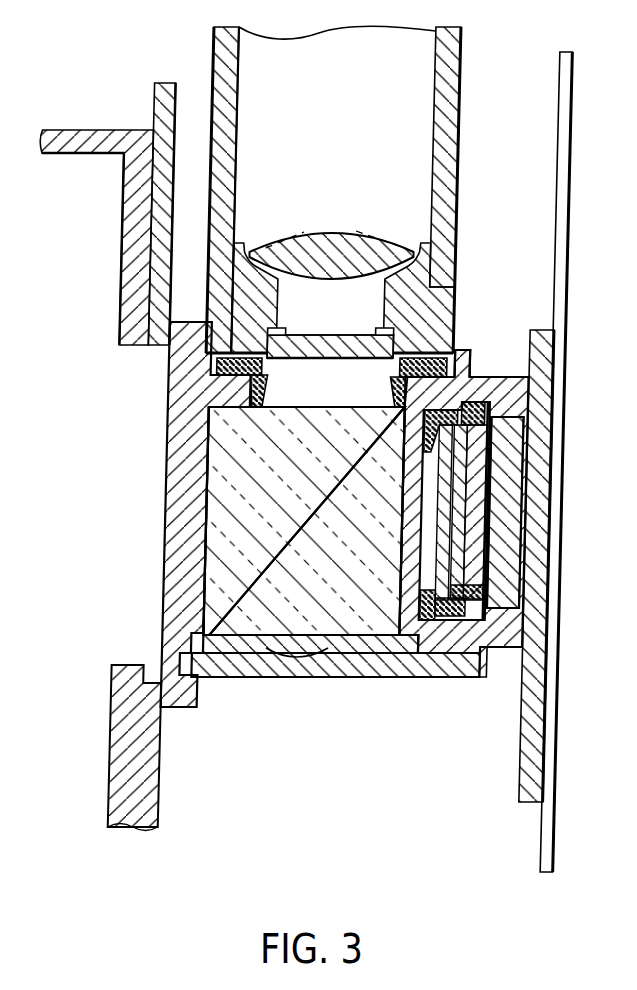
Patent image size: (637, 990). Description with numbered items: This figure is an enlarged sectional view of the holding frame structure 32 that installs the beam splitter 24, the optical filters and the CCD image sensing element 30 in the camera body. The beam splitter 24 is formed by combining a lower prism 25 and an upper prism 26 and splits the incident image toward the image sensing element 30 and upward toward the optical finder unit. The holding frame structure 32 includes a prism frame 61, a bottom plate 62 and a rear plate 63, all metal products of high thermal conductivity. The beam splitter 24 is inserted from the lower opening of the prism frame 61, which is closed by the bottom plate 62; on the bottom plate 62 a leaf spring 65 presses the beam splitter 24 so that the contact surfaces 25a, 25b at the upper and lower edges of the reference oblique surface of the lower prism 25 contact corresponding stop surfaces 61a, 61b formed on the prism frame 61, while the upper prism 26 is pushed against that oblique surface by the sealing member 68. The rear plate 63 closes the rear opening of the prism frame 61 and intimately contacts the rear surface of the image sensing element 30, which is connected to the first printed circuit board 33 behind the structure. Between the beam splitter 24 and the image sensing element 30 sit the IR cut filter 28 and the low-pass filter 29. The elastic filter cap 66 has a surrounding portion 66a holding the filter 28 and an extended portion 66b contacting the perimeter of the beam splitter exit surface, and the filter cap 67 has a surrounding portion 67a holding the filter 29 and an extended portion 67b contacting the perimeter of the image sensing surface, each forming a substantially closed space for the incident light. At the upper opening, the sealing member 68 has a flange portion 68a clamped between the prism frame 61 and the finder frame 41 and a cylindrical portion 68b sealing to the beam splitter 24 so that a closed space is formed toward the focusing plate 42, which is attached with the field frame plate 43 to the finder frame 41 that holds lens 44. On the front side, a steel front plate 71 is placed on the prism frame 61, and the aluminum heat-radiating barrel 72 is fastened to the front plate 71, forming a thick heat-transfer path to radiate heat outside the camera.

The beam splitter 24 is at (233, 554).
The lower prism 25 is at (268, 602).
The contact surface 25a is at (380, 462).
The contact surface 25b is at (212, 656).
The upper prism 26 is at (225, 506).
The IR cut filter 28 is at (445, 520).
The low-pass filter 29 is at (462, 500).
The CCD image sensing element 30 is at (508, 540).
The holding frame structure 32 is at (124, 617).
The first printed circuit board 33 is at (563, 242).
The finder frame 41 is at (446, 126).
The focusing plate 42 is at (333, 343).
The field frame plate 43 is at (283, 330).
The lens 44 is at (329, 231).
The prism frame 61 is at (190, 448).
The stop surface 61a is at (462, 386).
The stop surface 61b is at (194, 625).
The bottom plate 62 is at (270, 680).
The rear plate 63 is at (545, 363).
The leaf spring 65 is at (298, 660).
The filter cap 66 is at (478, 470).
The surrounding portion 66a is at (447, 632).
The extended portion 66b is at (420, 642).
The filter cap 67 is at (476, 410).
The surrounding portion 67a is at (490, 656).
The extended portion 67b is at (472, 590).
The sealing member 68 is at (399, 368).
The flange portion 68a is at (261, 367).
The cylindrical portion 68b is at (262, 393).
The front plate 71 is at (158, 84).
The heat-radiating barrel 72 is at (70, 152).